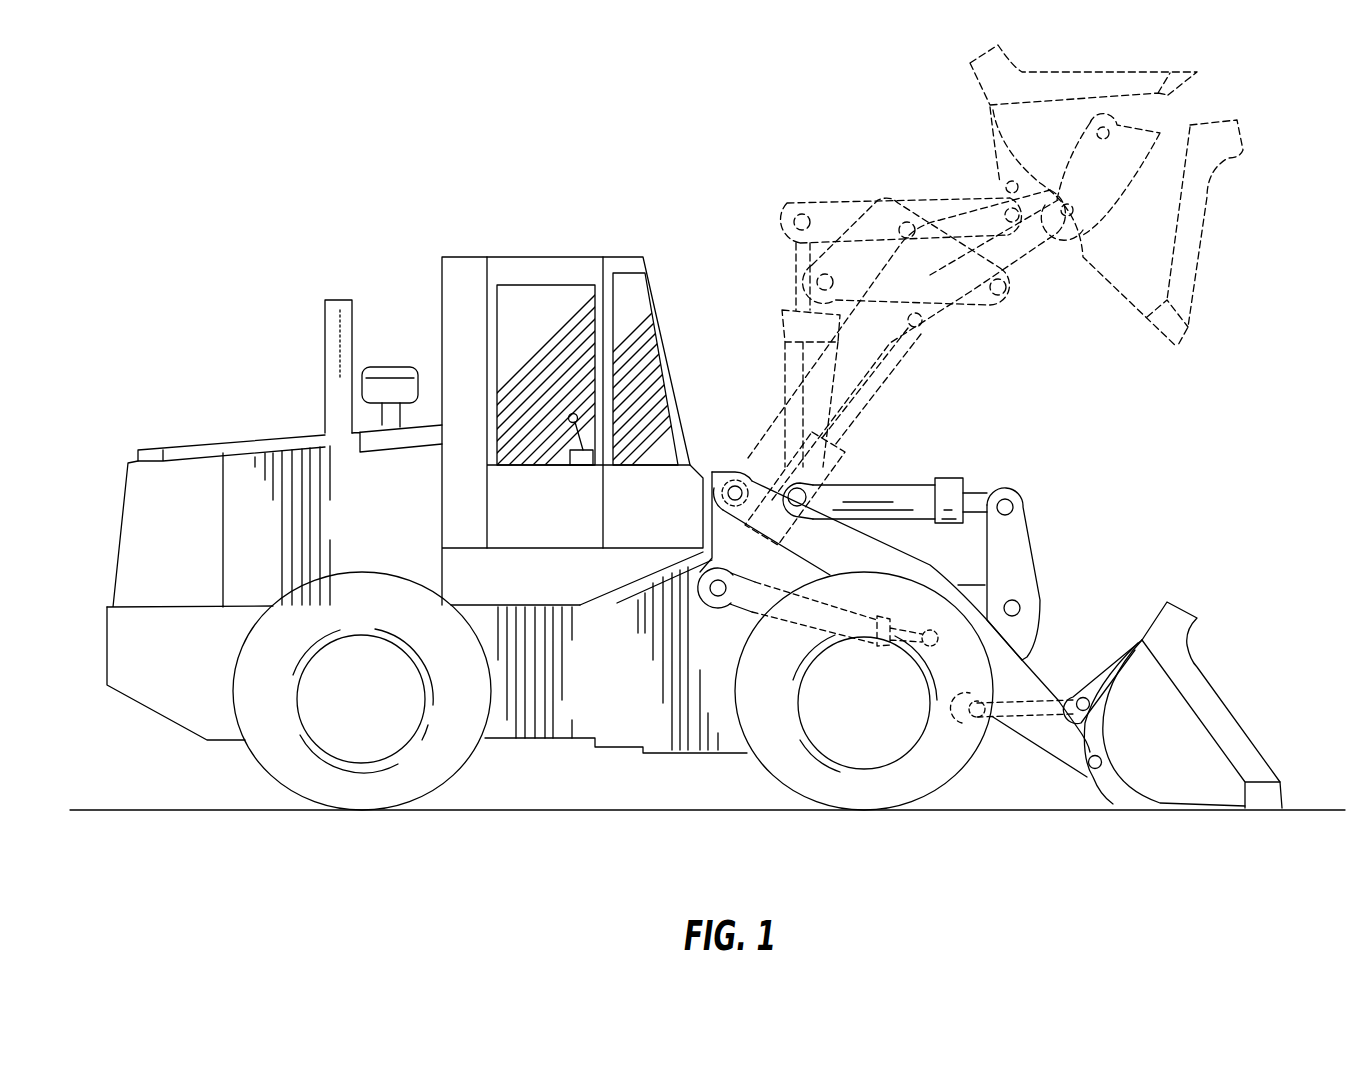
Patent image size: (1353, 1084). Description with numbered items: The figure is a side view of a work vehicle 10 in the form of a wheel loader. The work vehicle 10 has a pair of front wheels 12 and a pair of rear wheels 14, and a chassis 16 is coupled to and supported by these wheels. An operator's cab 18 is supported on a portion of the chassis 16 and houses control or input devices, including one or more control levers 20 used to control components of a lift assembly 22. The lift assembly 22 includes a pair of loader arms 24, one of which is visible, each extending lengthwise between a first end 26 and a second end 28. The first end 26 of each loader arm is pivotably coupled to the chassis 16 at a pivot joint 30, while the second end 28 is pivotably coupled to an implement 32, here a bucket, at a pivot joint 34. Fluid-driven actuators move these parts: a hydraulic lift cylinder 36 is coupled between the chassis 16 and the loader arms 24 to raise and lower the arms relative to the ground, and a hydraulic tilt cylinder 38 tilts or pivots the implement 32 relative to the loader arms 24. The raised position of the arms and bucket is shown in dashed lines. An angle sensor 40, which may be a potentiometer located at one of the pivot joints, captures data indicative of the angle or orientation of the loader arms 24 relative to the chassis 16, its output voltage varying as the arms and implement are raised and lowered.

The work vehicle 10 is at (702, 203).
The front wheels 12 is at (908, 790).
The rear wheels 14 is at (317, 790).
The chassis 16 is at (508, 720).
The operator's cab 18 is at (648, 333).
The control levers 20 is at (568, 413).
The lift assembly 22 is at (1058, 415).
The loader arms 24 is at (1005, 675).
The first end 26 is at (748, 470).
The second end 28 is at (1063, 745).
The pivot joints 30 is at (732, 505).
The implement 32 is at (1248, 724).
The pivot joints 34 is at (1093, 777).
The hydraulic lift cylinders 36 is at (728, 625).
The hydraulic tilt cylinders 38 is at (889, 465).
The angle sensor 40 is at (730, 473).